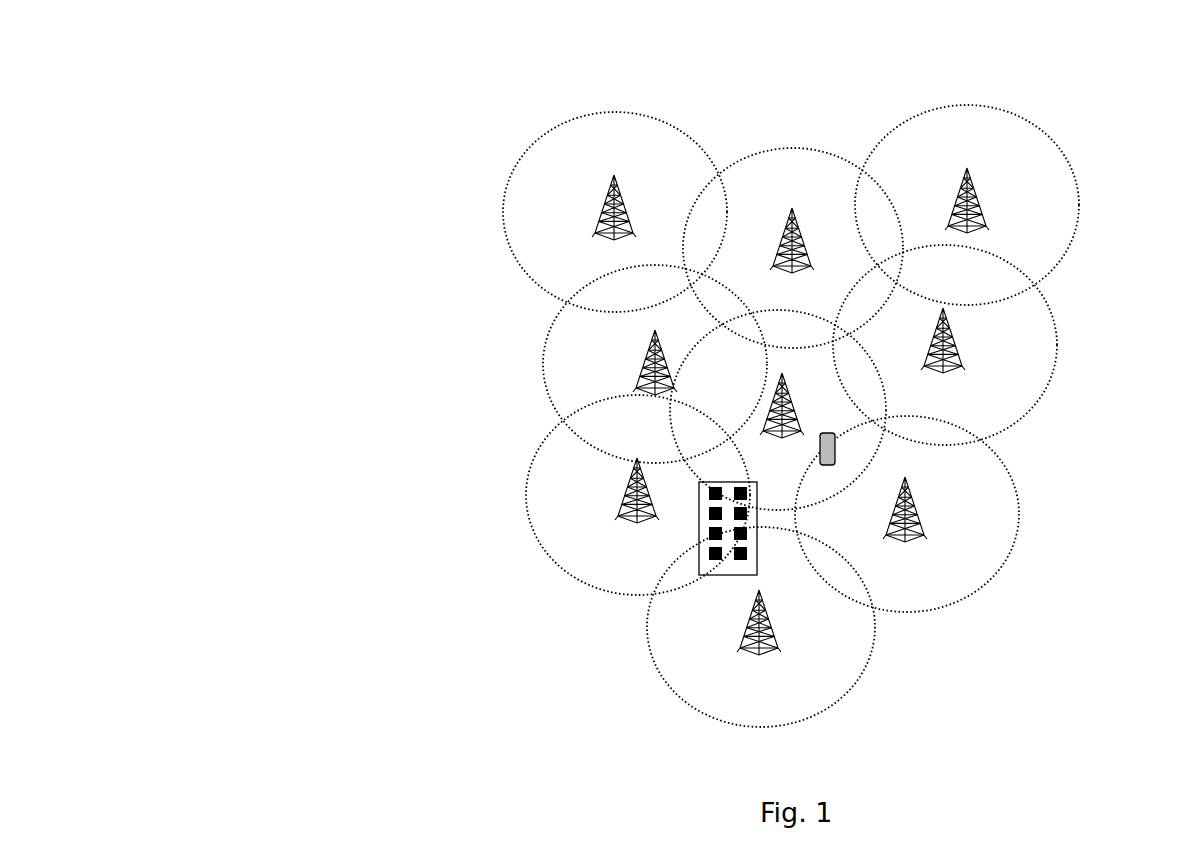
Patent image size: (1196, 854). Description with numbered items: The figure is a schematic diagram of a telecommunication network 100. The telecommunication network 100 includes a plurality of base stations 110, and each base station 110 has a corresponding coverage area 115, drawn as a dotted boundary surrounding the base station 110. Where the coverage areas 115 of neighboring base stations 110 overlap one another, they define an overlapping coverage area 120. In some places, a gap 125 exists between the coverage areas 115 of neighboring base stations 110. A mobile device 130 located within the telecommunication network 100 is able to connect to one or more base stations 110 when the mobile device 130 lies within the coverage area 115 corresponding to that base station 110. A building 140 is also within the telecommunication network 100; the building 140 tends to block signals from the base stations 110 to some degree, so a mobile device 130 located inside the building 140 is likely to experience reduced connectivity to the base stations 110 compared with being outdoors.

The telecommunication network 100 is at (129, 78).
The base station 110 is at (607, 205).
The coverage area 115 is at (506, 240).
The overlapping coverage area 120 is at (605, 434).
The gap 125 is at (778, 518).
The mobile device 130 is at (836, 448).
The building 140 is at (757, 563).